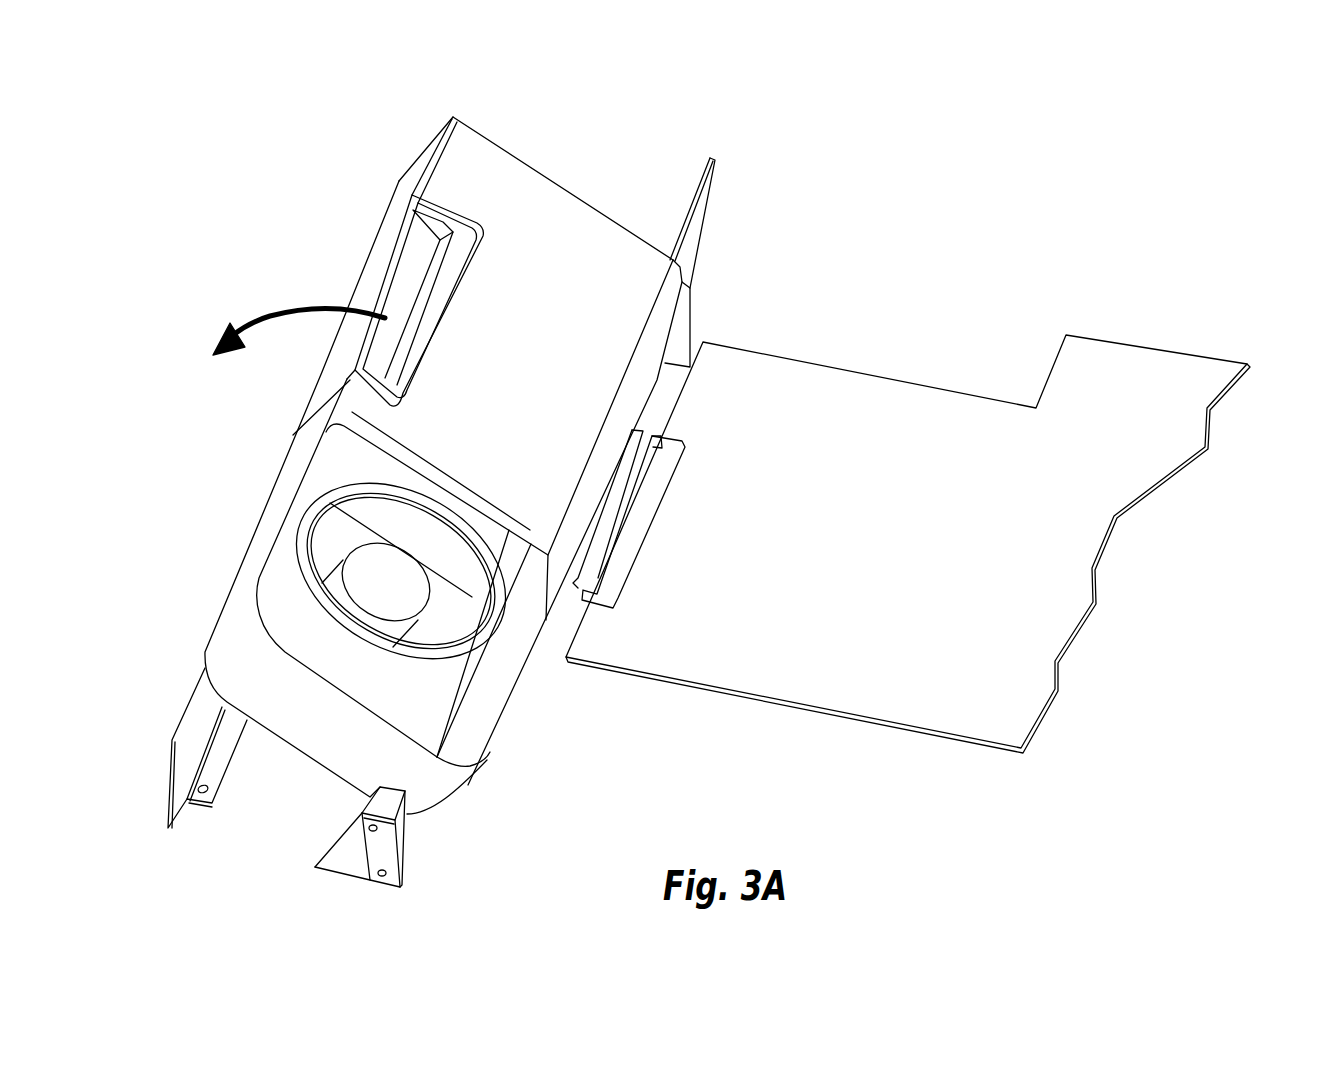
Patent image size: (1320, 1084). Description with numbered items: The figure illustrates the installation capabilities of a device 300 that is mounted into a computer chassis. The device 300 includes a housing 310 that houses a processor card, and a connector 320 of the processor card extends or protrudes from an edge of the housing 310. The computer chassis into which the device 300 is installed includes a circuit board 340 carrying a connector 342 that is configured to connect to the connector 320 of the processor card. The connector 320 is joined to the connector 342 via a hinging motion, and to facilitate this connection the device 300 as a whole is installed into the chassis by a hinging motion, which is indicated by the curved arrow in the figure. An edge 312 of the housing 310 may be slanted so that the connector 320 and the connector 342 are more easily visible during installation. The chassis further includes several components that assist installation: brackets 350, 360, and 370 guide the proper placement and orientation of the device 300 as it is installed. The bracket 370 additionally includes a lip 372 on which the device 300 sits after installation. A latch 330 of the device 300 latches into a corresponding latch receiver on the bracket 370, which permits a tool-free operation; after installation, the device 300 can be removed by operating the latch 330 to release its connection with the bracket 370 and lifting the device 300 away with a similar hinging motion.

The device 300 is at (587, 163).
The housing 310 is at (487, 728).
The edge 312 is at (660, 340).
The connector 320 is at (600, 533).
The latch 330 is at (390, 298).
The circuit board 340 is at (1114, 372).
The connector 342 is at (660, 477).
The bracket 350 is at (403, 838).
The bracket 360 is at (708, 203).
The bracket 370 is at (185, 710).
The lip 372 is at (220, 747).